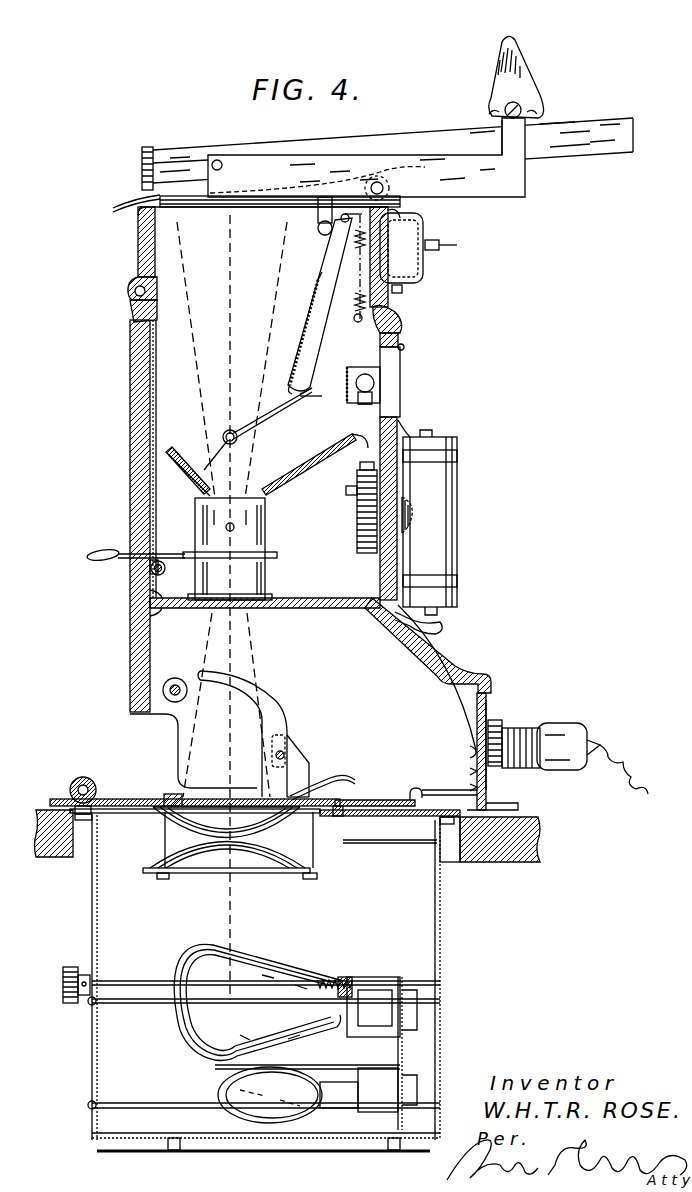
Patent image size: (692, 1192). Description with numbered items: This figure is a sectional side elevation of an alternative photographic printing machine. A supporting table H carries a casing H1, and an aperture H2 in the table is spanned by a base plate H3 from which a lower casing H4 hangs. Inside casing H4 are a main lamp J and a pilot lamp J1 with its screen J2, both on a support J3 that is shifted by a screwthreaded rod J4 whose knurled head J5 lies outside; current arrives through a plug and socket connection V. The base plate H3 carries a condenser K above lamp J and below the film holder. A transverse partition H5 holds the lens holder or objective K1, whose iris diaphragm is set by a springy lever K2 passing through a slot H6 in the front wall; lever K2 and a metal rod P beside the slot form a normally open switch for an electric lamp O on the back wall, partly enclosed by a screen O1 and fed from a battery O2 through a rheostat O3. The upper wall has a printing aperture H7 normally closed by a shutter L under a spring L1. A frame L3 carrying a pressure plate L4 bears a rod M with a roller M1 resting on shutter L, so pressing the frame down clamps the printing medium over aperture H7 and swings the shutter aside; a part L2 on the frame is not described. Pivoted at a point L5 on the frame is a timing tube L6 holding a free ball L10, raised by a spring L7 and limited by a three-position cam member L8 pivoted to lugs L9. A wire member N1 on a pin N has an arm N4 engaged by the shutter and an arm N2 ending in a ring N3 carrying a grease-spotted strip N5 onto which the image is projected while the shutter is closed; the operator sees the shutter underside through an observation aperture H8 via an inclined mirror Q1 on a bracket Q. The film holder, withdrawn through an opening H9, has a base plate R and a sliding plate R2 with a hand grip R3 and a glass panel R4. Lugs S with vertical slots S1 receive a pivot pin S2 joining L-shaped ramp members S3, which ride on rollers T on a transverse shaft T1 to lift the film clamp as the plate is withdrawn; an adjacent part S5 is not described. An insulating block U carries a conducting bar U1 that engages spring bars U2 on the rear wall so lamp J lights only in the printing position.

The tube L6 is at (440, 140).
The ball L10 is at (160, 160).
The frame L3 is at (476, 185).
The pivot point L5 is at (218, 160).
The spring L7 is at (305, 150).
The lugs L9 is at (516, 135).
The cam member L8 is at (520, 72).
The pressure plate L4 is at (135, 203).
The housing L2 is at (395, 213).
The printing aperture H7 is at (218, 208).
The rod M is at (327, 200).
The roller M1 is at (324, 232).
The observation aperture H8 is at (150, 378).
The casing H1 is at (130, 618).
The shutter member L is at (338, 318).
The spring L1 is at (345, 322).
The electric lamp O is at (375, 383).
The screen O1 is at (333, 396).
The battery O2 is at (440, 512).
The rheostat O3 is at (357, 533).
The pin N is at (236, 440).
The wire member N1 is at (238, 434).
The arm N4 is at (300, 398).
The arm N2 is at (215, 458).
The ring N3 is at (178, 460).
The strip of material N5 is at (170, 450).
The support or bracket Q is at (330, 470).
The inclined mirror Q1 is at (352, 445).
The lens holder or objective K1 is at (248, 572).
The slot H6 is at (130, 552).
The lever K2 is at (150, 568).
The metal rod P is at (152, 572).
The transverse partition H5 is at (345, 620).
The plug and socket connection V is at (556, 725).
The rollers T is at (163, 686).
The transverse shaft T1 is at (170, 692).
The opening H9 is at (138, 716).
The ramp members S3 is at (268, 700).
The vertical slots S1 is at (284, 740).
The pivot pin S2 is at (284, 753).
The lugs S is at (309, 765).
The spring S5 is at (340, 778).
The insulating block U is at (378, 800).
The conducting bar U1 is at (414, 790).
The spring conducting bars U2 is at (454, 790).
The base plate R is at (118, 799).
The sliding film-supporting plate R2 is at (150, 809).
The hand grip R3 is at (75, 782).
The glass panel R4 is at (220, 799).
The aperture H2 is at (72, 855).
The supporting table H is at (500, 862).
The base plate H3 is at (375, 815).
The casing H4 is at (90, 1047).
The condenser K is at (200, 858).
The screwthreaded rod J4 is at (150, 982).
The knurled head J5 is at (68, 1002).
The main lamp J is at (180, 1024).
The support J3 is at (402, 1045).
The screen J2 is at (245, 1082).
The pilot lamp J1 is at (295, 1122).